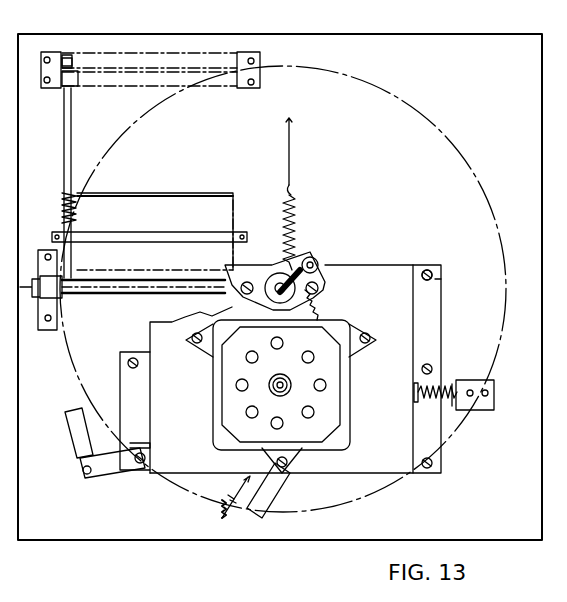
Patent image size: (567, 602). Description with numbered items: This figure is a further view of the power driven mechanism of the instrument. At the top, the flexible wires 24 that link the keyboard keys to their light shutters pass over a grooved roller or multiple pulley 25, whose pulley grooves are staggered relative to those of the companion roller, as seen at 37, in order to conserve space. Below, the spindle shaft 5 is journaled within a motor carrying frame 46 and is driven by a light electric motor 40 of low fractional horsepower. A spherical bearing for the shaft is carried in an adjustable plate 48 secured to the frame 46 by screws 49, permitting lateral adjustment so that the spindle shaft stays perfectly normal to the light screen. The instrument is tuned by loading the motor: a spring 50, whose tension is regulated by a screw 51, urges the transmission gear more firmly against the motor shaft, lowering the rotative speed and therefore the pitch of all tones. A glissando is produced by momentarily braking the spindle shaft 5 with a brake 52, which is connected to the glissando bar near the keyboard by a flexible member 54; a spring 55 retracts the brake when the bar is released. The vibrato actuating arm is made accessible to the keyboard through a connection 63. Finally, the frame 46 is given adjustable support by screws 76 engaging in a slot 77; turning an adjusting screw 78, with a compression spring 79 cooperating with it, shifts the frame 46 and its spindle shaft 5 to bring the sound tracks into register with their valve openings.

The spindle shaft 5 is at (272, 294).
The flexible wire 24 is at (70, 135).
The grooved roller 25 is at (110, 78).
The staggered pulley grooves 37 is at (67, 60).
The electric motor 40 is at (345, 396).
The motor carrying frame 46 is at (360, 452).
The adjustable plate 48 is at (228, 297).
The screws 49 is at (243, 286).
The spring 50 is at (243, 478).
The screw 51 is at (240, 518).
The brake 52 is at (313, 275).
The flexible member 54 is at (291, 160).
The spring 55 is at (313, 300).
The connection 63 is at (70, 446).
The screws 76 is at (430, 272).
The slot 77 is at (440, 279).
The adjusting screw 78 is at (440, 396).
The compression spring 79 is at (425, 460).